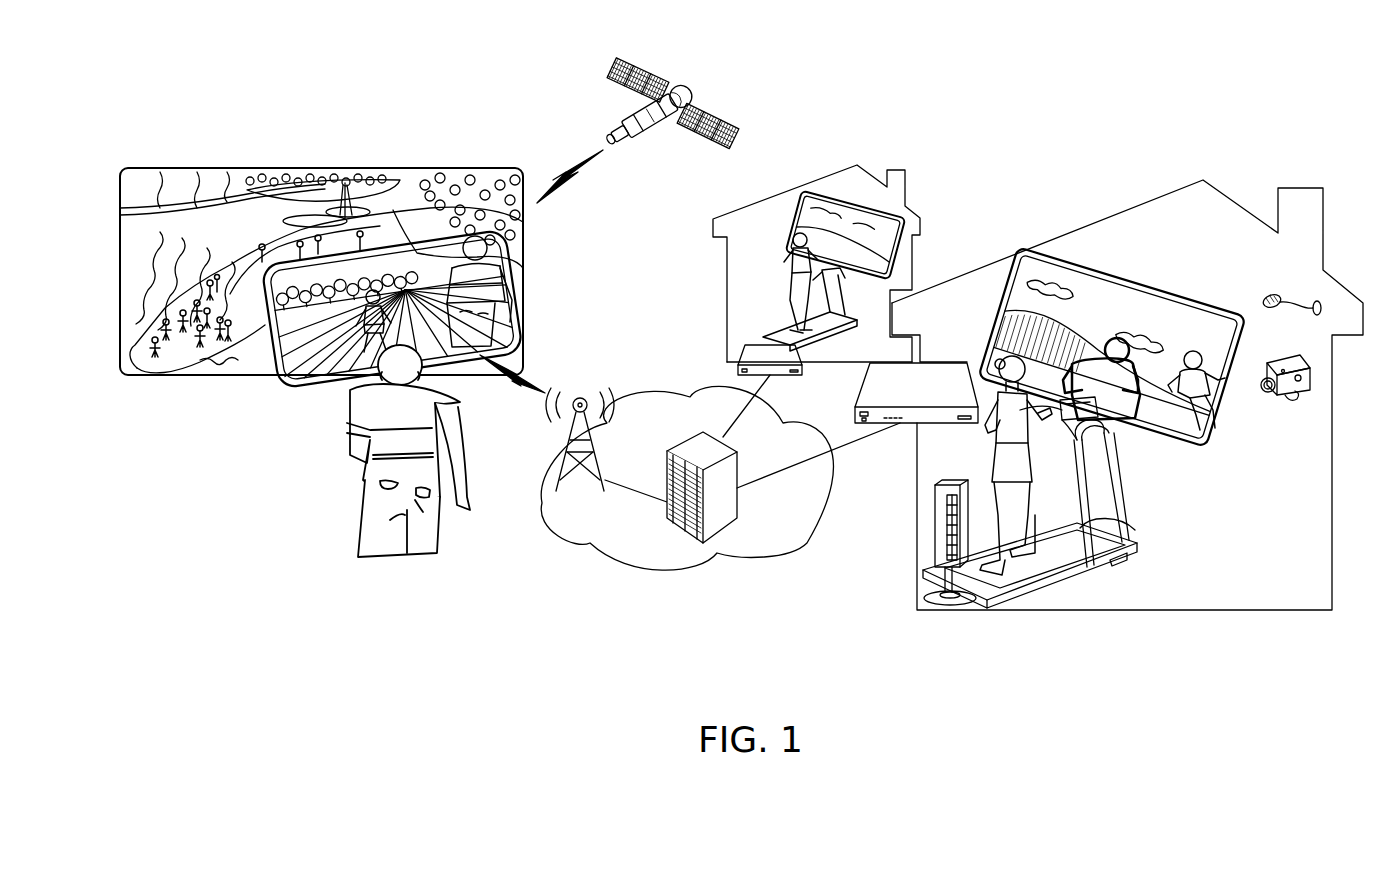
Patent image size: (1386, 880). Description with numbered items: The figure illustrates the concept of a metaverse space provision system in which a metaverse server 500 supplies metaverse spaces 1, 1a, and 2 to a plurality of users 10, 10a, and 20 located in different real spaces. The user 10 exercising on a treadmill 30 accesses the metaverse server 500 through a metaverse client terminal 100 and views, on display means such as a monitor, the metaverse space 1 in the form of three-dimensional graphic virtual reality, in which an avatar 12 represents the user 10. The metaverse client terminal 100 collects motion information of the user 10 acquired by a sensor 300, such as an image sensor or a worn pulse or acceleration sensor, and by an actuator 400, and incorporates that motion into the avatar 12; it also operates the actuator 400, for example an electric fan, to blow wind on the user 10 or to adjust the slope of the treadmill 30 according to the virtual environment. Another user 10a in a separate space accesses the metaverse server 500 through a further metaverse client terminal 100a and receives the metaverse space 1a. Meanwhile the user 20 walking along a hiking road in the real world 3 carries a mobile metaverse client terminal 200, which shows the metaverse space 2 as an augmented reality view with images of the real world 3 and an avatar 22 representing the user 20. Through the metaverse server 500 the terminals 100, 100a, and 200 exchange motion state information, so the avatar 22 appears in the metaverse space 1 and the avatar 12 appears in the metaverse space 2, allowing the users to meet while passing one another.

The metaverse space 1 is at (1072, 290).
The metaverse space 1a is at (813, 213).
The metaverse space 2 is at (395, 290).
The real world 3 is at (305, 192).
The user 10 is at (1000, 340).
The user 10a is at (795, 268).
The avatar 12 is at (365, 318).
The user 20 is at (372, 503).
The avatar 22 is at (530, 268).
The treadmill 30 is at (1104, 566).
The metaverse client terminal 100 is at (920, 425).
The metaverse client terminal 100a is at (742, 350).
The mobile metaverse client terminal 200 is at (267, 388).
The sensor 300 is at (1270, 310).
The actuator 400 is at (1057, 553).
The metaverse server 500 is at (663, 533).